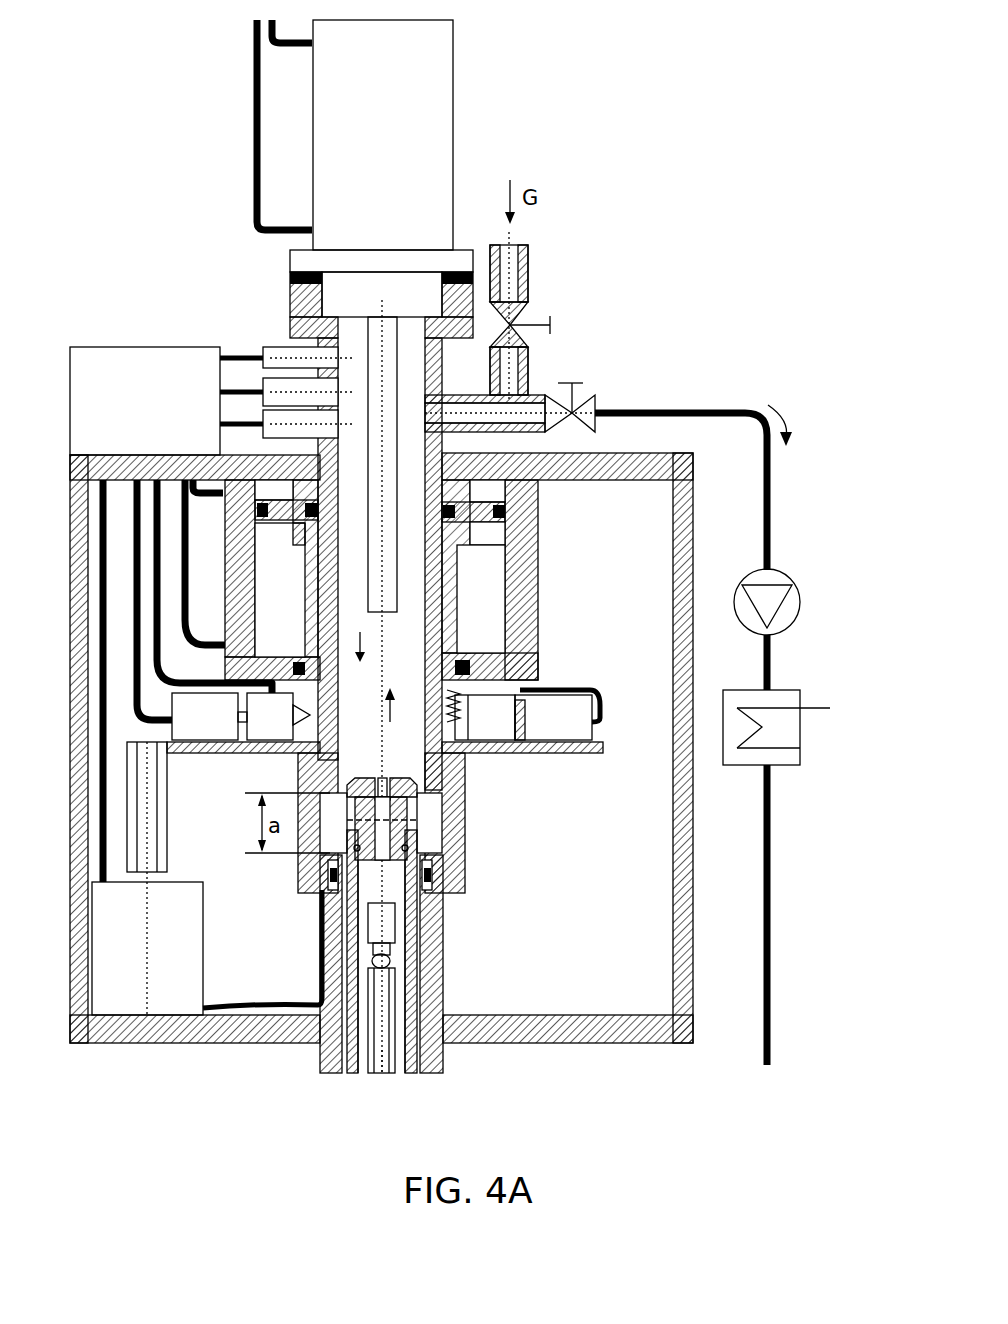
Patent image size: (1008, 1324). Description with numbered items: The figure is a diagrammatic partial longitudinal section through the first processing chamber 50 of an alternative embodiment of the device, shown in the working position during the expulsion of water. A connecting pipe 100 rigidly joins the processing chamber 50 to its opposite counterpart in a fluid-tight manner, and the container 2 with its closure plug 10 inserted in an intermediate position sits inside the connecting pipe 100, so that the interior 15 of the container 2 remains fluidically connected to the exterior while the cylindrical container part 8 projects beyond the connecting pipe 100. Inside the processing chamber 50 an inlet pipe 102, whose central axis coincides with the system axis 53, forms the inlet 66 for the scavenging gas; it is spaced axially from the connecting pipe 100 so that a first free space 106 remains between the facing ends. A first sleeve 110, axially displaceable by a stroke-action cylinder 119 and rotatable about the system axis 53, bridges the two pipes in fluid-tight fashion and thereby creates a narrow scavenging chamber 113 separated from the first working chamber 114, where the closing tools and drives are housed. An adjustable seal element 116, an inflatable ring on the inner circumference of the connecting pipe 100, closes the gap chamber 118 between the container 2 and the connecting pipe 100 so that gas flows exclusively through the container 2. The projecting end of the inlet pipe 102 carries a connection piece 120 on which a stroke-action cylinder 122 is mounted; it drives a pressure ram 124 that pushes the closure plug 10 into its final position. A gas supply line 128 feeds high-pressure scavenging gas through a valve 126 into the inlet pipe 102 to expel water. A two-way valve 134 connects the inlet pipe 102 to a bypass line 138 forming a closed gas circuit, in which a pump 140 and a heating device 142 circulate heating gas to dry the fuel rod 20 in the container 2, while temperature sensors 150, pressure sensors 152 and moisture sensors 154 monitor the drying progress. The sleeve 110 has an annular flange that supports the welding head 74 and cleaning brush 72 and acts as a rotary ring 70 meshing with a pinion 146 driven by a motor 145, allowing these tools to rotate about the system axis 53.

The container 2 is at (412, 958).
The cylindrical container part 8 is at (412, 1000).
The closure plug 10 is at (432, 836).
The interior of the container 15 is at (397, 895).
The fuel rod 20 is at (390, 1062).
The first processing chamber 50 is at (236, 1078).
The system axis 53 is at (505, 657).
The inlet 66 is at (412, 423).
The rotary ring 70 is at (595, 755).
The cleaning brush 72 is at (487, 717).
The welding head 74 is at (262, 715).
The connecting pipe 100 is at (332, 1060).
The inlet pipe 102 is at (435, 617).
The first free space 106 is at (465, 863).
The first sleeve 110 is at (420, 800).
The scavenging chamber 113 is at (364, 737).
The first working chamber 114 is at (622, 946).
The adjustable seal element 116 is at (330, 887).
The gap chamber 118 is at (407, 936).
The stroke-action cylinder 119 is at (495, 565).
The connection piece 120 is at (300, 287).
The stroke-action cylinder 122 is at (425, 172).
The pressure ram 124 is at (387, 530).
The valve 126 is at (528, 315).
The gas supply line 128 is at (530, 273).
The two-way valve 134 is at (585, 392).
The bypass line 138 is at (772, 878).
The pump 140 is at (803, 604).
The heating device 142 is at (843, 739).
The motor 145 is at (190, 966).
The pinion 146 is at (152, 846).
The temperature sensor 150 is at (263, 428).
The pressure sensor 152 is at (262, 390).
The moisture sensor 154 is at (273, 353).